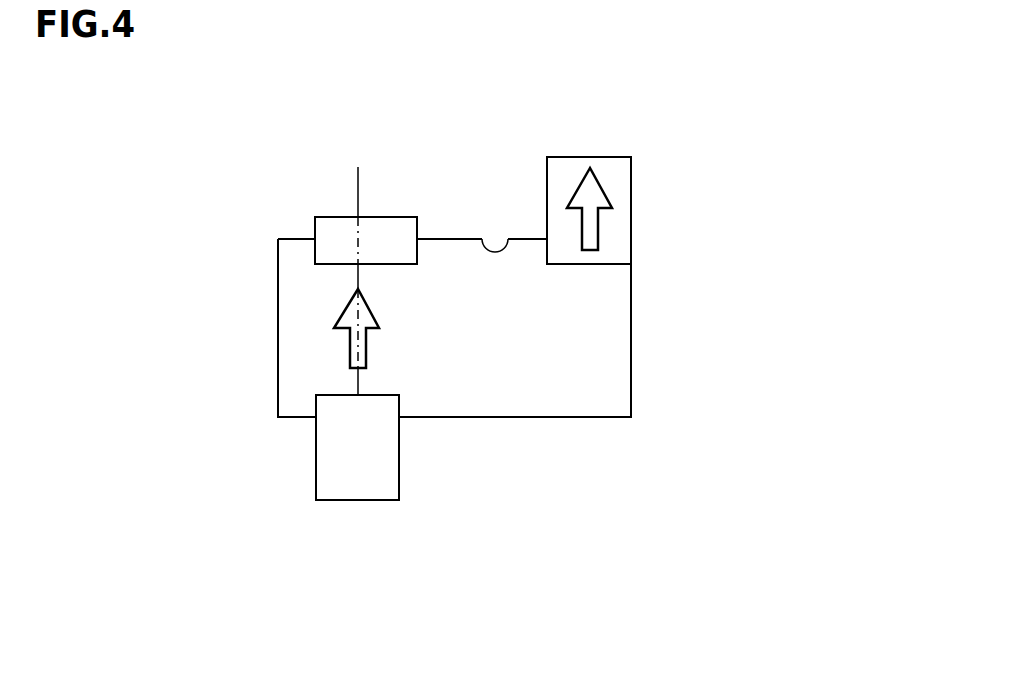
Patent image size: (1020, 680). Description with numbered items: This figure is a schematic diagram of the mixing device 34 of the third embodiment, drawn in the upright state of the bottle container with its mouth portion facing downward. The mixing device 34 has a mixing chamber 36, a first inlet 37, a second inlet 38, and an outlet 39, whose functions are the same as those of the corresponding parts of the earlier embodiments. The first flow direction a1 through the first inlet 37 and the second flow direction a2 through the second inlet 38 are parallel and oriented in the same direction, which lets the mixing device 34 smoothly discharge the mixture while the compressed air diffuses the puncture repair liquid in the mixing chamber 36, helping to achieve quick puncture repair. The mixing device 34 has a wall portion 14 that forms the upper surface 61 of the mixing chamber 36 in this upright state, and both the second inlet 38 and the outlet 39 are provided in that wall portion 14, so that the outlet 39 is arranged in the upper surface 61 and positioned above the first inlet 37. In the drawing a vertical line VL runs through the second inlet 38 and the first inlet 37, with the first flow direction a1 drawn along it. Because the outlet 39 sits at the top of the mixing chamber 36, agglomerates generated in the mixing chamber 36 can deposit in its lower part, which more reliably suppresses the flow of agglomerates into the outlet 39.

The mixing device 34 is at (671, 130).
The mixing chamber 36 is at (537, 378).
The first inlet 37 is at (337, 395).
The second inlet 38 is at (333, 264).
The outlet 39 is at (590, 264).
The wall portion 14 is at (452, 239).
The upper surface 61 is at (482, 239).
The first flow direction a1 is at (366, 348).
The second flow direction a2 is at (575, 188).
The vertical line VL is at (358, 194).